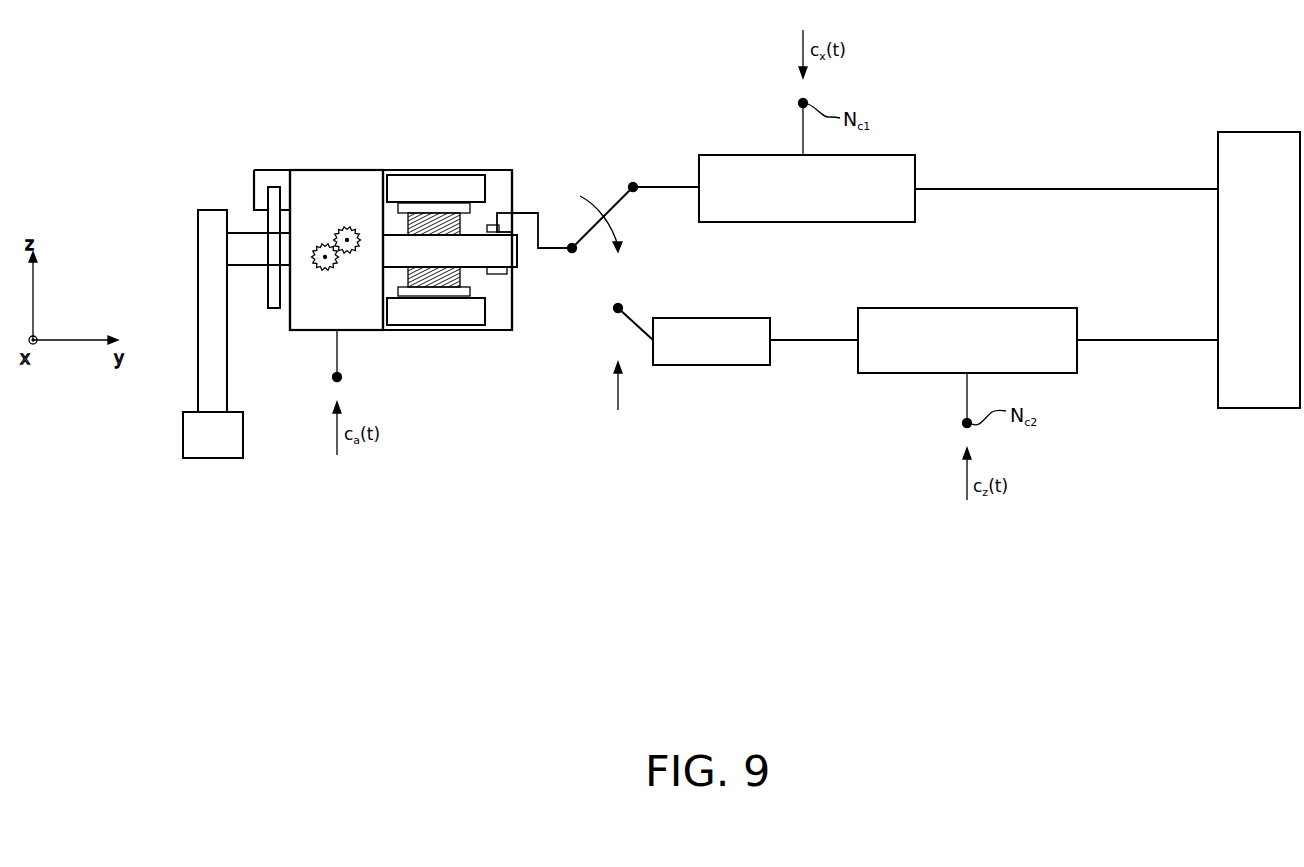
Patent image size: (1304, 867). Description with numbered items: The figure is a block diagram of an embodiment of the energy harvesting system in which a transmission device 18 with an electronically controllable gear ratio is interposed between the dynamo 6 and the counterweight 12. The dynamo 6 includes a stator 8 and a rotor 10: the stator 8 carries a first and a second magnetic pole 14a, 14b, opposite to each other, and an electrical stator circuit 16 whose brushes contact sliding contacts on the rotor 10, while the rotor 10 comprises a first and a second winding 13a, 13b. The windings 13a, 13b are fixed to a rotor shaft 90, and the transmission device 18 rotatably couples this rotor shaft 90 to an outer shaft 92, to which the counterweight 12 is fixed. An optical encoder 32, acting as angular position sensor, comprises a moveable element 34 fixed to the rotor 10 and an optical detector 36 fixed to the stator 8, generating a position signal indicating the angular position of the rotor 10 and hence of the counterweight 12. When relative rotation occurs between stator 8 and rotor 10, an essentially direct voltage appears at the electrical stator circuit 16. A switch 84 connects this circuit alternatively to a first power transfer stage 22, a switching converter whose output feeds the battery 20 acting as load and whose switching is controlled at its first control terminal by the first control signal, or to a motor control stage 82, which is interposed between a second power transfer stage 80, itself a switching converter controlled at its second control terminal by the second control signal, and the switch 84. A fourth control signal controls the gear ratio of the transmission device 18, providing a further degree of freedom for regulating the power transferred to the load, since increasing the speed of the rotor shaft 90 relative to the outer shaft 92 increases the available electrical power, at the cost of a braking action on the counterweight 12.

The dynamo 6 is at (456, 338).
The stator 8 is at (416, 157).
The rotor 10 is at (378, 204).
The counterweight 12 is at (214, 447).
The first winding 13a is at (470, 289).
The second winding 13b is at (461, 225).
The first magnetic pole 14a is at (401, 312).
The second magnetic pole 14b is at (397, 180).
The electrical stator circuit 16 is at (504, 213).
The transmission device 18 is at (315, 193).
The battery 20 is at (1287, 144).
The first power transfer stage 22 is at (917, 166).
The optical encoder 32 is at (262, 160).
The moveable element 34 is at (275, 310).
The optical detector 36 is at (256, 197).
The second power transfer stage 80 is at (1053, 318).
The motor control stage 82 is at (751, 359).
The switch 84 is at (597, 228).
The rotor shaft 90 is at (380, 252).
The outer shaft 92 is at (243, 256).